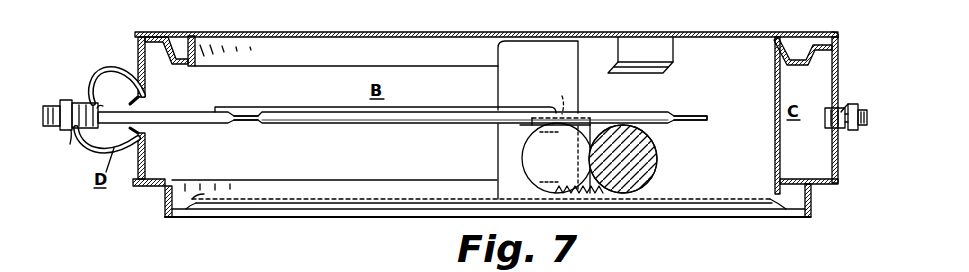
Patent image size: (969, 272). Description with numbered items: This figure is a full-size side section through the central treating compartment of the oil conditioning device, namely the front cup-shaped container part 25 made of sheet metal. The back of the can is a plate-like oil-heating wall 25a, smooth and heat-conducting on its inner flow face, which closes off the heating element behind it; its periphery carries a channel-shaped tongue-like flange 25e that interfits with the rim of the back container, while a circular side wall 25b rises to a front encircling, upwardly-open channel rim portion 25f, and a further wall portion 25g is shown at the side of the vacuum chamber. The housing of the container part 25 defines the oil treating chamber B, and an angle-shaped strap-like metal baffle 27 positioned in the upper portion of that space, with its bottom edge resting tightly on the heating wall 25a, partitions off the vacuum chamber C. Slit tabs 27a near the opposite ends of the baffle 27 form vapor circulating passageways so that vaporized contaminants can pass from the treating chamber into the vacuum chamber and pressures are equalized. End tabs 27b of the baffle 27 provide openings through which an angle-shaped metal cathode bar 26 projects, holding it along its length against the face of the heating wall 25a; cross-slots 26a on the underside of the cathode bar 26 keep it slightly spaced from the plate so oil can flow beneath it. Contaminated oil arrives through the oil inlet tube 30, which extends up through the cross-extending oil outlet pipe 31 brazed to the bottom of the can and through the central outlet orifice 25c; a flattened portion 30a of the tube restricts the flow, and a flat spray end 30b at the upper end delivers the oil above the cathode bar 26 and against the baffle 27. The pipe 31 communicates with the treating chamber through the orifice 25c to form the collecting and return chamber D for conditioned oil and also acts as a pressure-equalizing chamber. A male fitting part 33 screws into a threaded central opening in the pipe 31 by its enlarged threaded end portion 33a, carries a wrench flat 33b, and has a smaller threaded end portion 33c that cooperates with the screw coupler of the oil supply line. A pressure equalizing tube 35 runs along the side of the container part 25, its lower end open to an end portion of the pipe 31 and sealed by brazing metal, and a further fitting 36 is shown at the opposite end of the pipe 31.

The container part 25 is at (446, 31).
The back oil-heating wall 25a is at (417, 204).
The circular side wall 25b is at (145, 76).
The central outlet orifice 25c is at (146, 132).
The peripheral flange 25e is at (804, 218).
The front rim portion 25f is at (800, 14).
The housing right wall 25g is at (831, 130).
The cathode bar 26 is at (657, 157).
The cross-slots 26a is at (575, 188).
The baffle 27 is at (774, 80).
The slit tabs 27a is at (630, 73).
The end tabs 27b is at (553, 136).
The oil inlet tube 30 is at (447, 125).
The flattened portion 30a is at (240, 124).
The flat spray end 30b is at (689, 118).
The oil outlet pipe 31 is at (121, 73).
The male fitting part 33 is at (78, 134).
The enlarged threaded end portion 33a is at (85, 100).
The wrench flat 33b is at (43, 128).
The smaller threaded end portion 33c is at (44, 106).
The pressure equalizing tube 35 is at (327, 107).
The right nut 36 is at (852, 130).